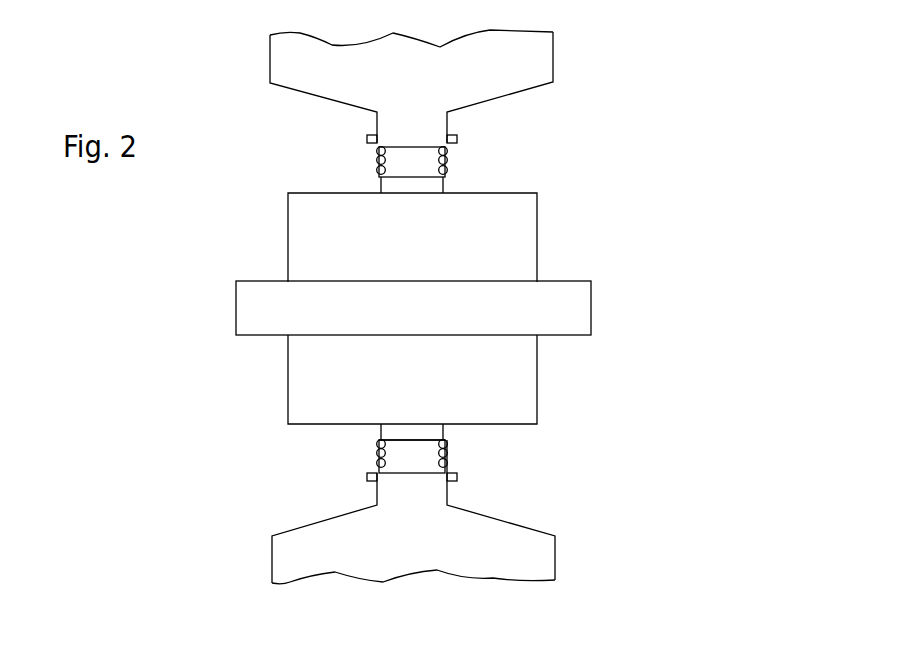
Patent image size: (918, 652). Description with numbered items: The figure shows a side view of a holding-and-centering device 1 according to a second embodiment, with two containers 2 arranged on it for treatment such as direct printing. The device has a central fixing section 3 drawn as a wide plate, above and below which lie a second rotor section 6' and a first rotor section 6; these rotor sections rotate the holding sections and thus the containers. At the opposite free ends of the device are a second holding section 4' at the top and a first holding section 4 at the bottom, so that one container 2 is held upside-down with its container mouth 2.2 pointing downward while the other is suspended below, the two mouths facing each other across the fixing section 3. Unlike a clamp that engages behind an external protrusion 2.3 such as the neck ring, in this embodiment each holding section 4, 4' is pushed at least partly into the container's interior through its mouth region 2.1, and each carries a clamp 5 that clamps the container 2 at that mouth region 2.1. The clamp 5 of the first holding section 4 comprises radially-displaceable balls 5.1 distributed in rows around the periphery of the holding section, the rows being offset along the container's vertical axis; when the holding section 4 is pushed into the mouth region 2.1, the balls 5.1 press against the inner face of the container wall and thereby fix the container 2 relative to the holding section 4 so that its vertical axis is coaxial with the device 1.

The holding-and-centering device 1 is at (638, 203).
The container 2 is at (553, 62).
The mouth region 2.1 is at (455, 440).
The container mouth 2.2 is at (420, 438).
The protrusion 2.3 is at (457, 478).
The fixing section 3 is at (591, 281).
The first holding section 4 is at (383, 439).
The second holding section 4' is at (447, 178).
The clamp 5 is at (390, 135).
The radially-displaceable balls 5.1 is at (377, 172).
The first rotor section 6 is at (444, 379).
The second rotor section 6' is at (446, 237).